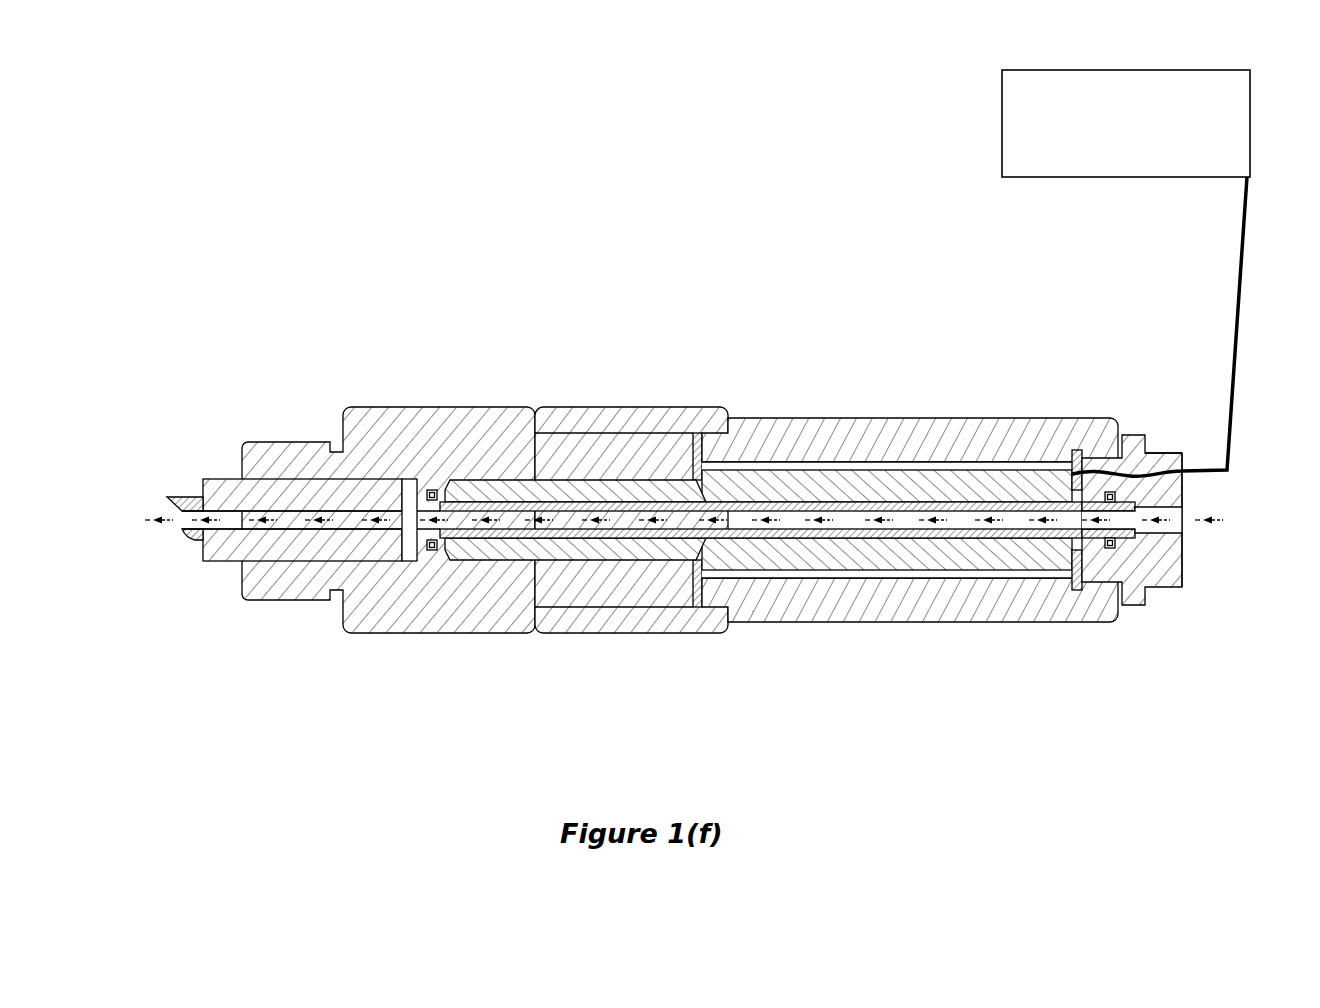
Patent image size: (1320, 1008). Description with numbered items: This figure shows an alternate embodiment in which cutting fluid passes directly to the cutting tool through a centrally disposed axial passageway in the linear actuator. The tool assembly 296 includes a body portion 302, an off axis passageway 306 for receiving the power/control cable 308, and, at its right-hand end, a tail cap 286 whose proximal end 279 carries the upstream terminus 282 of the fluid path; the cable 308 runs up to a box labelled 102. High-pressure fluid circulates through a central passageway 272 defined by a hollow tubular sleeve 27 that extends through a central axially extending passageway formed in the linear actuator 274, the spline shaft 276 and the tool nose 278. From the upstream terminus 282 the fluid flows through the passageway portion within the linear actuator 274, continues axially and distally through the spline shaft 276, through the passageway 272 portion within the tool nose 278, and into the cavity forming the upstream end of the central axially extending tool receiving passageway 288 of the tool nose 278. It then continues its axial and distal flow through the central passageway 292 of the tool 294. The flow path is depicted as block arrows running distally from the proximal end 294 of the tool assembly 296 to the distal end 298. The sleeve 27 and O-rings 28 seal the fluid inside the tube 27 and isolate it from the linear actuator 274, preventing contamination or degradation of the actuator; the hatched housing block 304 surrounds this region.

The controller 102 is at (988, 92).
The tool assembly 296 is at (732, 292).
The distal end 298 is at (63, 554).
The tool 294 is at (218, 483).
The tool receiving passageway 288 is at (410, 484).
The O-rings 28 is at (430, 490).
The tool nose 278 is at (468, 418).
The spline shaft 276 is at (598, 492).
The housing 304 is at (610, 590).
The central passageway 272 is at (838, 516).
The sleeve 27 is at (900, 505).
The linear actuator 274 is at (987, 480).
The body portion 302 is at (1025, 410).
The off axis passageway 306 is at (1172, 465).
The power/control cable 308 is at (1230, 322).
The central passageway of the tool 292 is at (1290, 506).
The upstream terminus 282 is at (1172, 533).
The tail cap 286 is at (1169, 604).
The proximal end 279 is at (1182, 585).